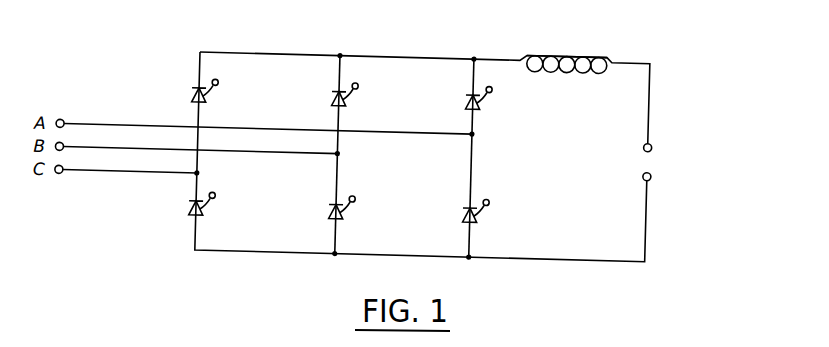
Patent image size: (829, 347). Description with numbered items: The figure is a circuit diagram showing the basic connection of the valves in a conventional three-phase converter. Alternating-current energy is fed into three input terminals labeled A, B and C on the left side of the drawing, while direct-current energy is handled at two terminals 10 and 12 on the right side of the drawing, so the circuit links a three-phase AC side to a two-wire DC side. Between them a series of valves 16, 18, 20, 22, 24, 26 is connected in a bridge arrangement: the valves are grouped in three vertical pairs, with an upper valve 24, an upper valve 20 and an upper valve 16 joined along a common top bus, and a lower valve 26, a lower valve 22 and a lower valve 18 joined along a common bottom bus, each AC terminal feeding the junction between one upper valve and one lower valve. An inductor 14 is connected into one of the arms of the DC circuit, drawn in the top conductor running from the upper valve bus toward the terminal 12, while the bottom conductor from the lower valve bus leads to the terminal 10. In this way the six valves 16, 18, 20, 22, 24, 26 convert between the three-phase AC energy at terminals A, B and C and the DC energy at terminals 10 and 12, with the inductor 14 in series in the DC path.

The DC terminal 10 is at (654, 166).
The DC terminal 12 is at (654, 136).
The inductor 14 is at (531, 46).
The valve 16 is at (492, 87).
The valve 18 is at (492, 199).
The valve 20 is at (358, 86).
The valve 22 is at (358, 199).
The valve 24 is at (218, 86).
The valve 26 is at (218, 199).